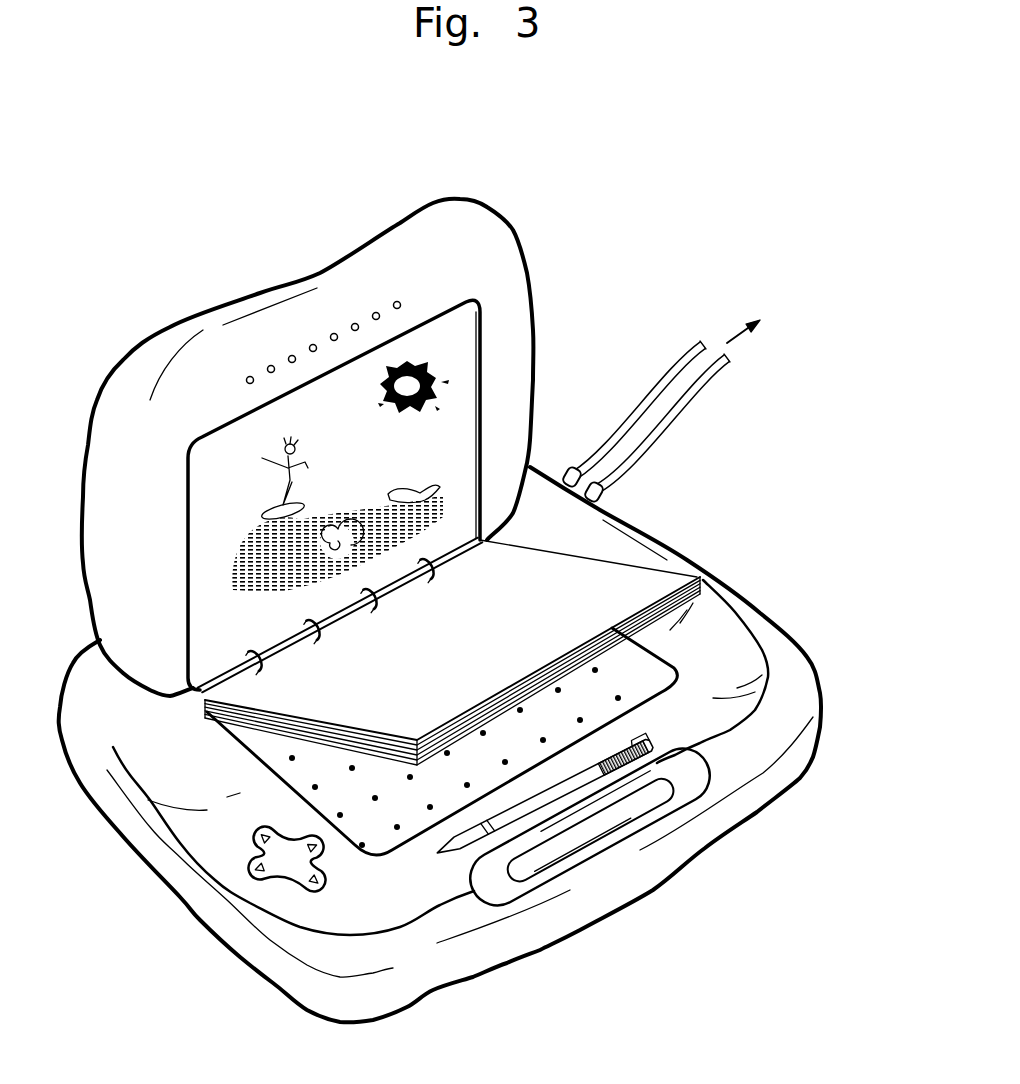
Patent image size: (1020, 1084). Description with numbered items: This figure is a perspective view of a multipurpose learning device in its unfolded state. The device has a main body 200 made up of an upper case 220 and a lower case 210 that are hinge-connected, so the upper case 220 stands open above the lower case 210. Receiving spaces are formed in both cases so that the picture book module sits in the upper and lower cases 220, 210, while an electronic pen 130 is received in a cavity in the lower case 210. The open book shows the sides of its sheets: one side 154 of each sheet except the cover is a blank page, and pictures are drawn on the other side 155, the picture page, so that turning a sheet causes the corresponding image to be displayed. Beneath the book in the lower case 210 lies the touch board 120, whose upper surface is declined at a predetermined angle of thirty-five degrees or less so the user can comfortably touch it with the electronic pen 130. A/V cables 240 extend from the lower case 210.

The main body 200 is at (667, 176).
The lower case 210 is at (823, 720).
The upper case 220 is at (267, 295).
The picture page 155 is at (452, 437).
The blank page 154 is at (623, 593).
The touch board 120 is at (612, 682).
The electronic pen 130 is at (660, 752).
The A/V cables 240 is at (683, 368).